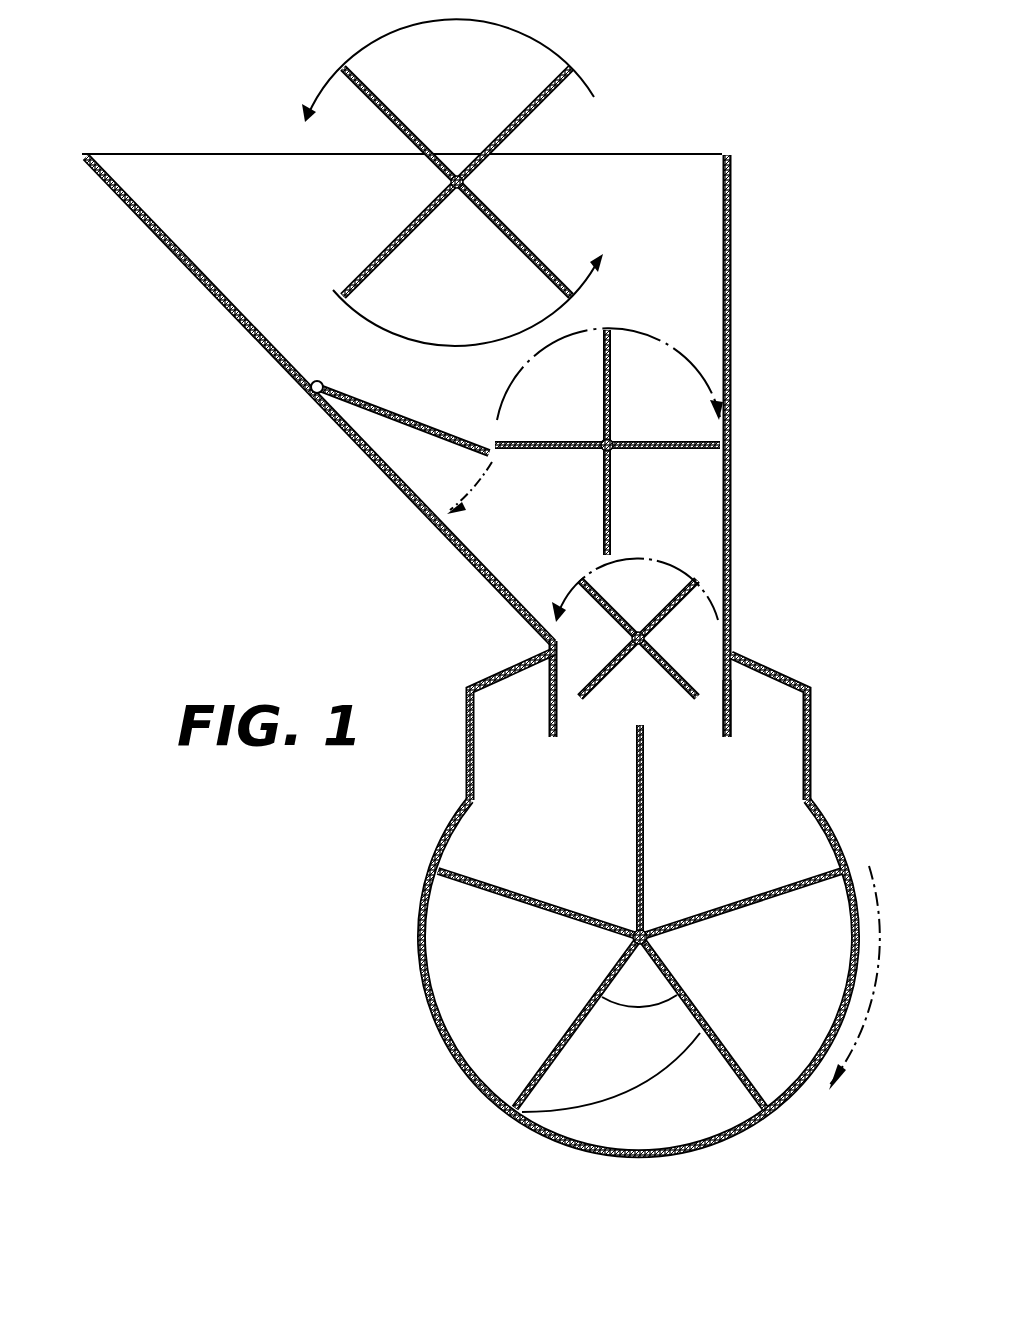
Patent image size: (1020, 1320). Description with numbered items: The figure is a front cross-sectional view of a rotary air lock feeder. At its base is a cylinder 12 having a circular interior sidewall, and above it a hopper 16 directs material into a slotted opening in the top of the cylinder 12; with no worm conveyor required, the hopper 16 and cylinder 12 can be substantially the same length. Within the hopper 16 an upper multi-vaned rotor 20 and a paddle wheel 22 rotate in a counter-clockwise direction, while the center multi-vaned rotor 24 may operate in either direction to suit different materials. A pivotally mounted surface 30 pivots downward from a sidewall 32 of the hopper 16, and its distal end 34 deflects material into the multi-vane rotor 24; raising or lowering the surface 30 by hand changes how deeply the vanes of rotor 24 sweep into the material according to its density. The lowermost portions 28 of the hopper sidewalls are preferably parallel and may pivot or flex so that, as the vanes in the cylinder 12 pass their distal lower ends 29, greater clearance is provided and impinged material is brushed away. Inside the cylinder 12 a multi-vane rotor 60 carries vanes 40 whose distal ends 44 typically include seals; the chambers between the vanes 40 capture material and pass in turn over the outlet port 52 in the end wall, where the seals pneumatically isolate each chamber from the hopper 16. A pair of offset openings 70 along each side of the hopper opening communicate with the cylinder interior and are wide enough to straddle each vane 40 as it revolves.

The cylinder 12 is at (477, 1086).
The hopper 16 is at (733, 186).
The multi-vaned rotor 20 is at (622, 615).
The paddle wheel 22 is at (377, 90).
The center multi-vaned rotor 24 is at (613, 378).
The lowermost portions of the hopper sidewalls 28 is at (562, 680).
The distal lower ends 29 is at (554, 740).
The pivotally mounted surface 30 is at (393, 417).
The sidewall 32 is at (242, 330).
The distal end 34 is at (490, 453).
The vanes 40 is at (633, 862).
The distal ends of the vanes 44 is at (837, 867).
The outlet port 52 is at (647, 1062).
The multi-vane rotor 60 is at (640, 916).
The offset openings 70 is at (510, 710).